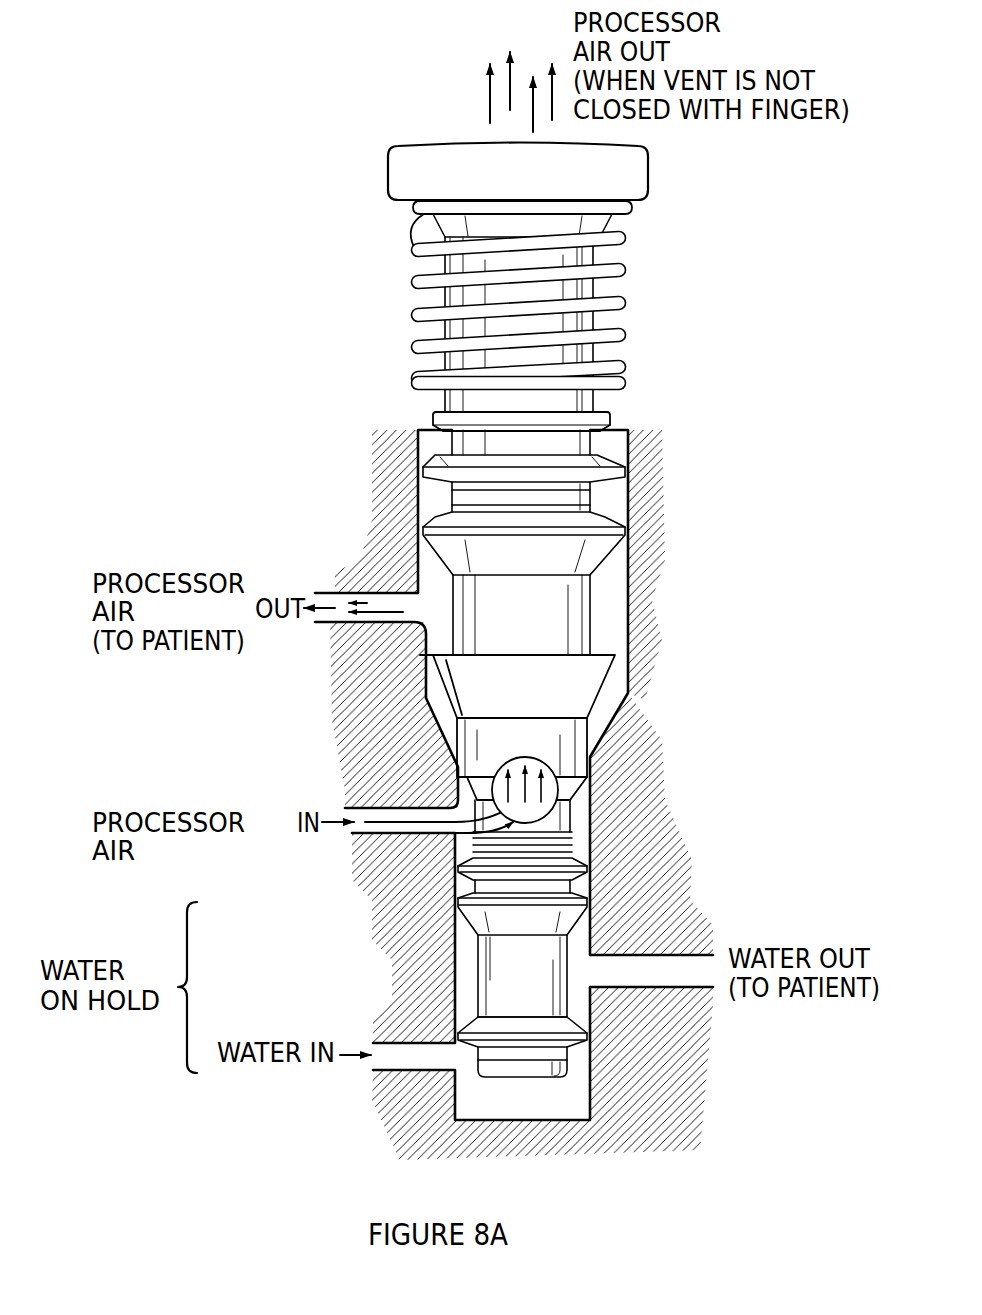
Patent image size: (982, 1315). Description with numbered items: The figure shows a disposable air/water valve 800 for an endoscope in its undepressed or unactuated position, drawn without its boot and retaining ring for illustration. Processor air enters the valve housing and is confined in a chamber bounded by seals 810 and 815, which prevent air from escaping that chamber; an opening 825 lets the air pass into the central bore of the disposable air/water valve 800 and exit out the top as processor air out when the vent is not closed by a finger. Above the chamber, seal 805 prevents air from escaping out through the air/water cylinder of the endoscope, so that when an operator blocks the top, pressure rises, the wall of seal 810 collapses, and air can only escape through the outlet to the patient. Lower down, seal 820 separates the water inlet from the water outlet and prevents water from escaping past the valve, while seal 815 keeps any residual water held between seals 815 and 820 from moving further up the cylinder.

The disposable air/water valve 800 is at (775, 313).
The seal 805 is at (595, 468).
The seal 810 is at (583, 690).
The seal 815 is at (567, 866).
The seal 820 is at (567, 1040).
The opening 825 is at (558, 789).